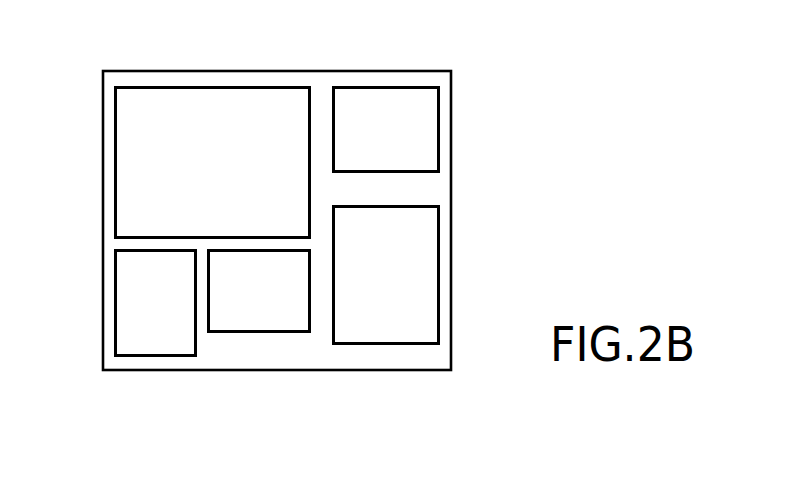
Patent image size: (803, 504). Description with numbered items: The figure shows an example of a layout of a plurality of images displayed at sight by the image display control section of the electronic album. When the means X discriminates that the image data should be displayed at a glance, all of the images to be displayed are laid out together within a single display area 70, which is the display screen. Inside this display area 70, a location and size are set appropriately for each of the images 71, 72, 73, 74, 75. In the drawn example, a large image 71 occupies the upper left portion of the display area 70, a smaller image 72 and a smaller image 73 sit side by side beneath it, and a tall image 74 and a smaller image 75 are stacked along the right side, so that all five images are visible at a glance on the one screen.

The display area 70 is at (324, 71).
The image 71 is at (120, 160).
The image 72 is at (120, 303).
The image 73 is at (254, 330).
The image 74 is at (435, 280).
The image 75 is at (435, 127).